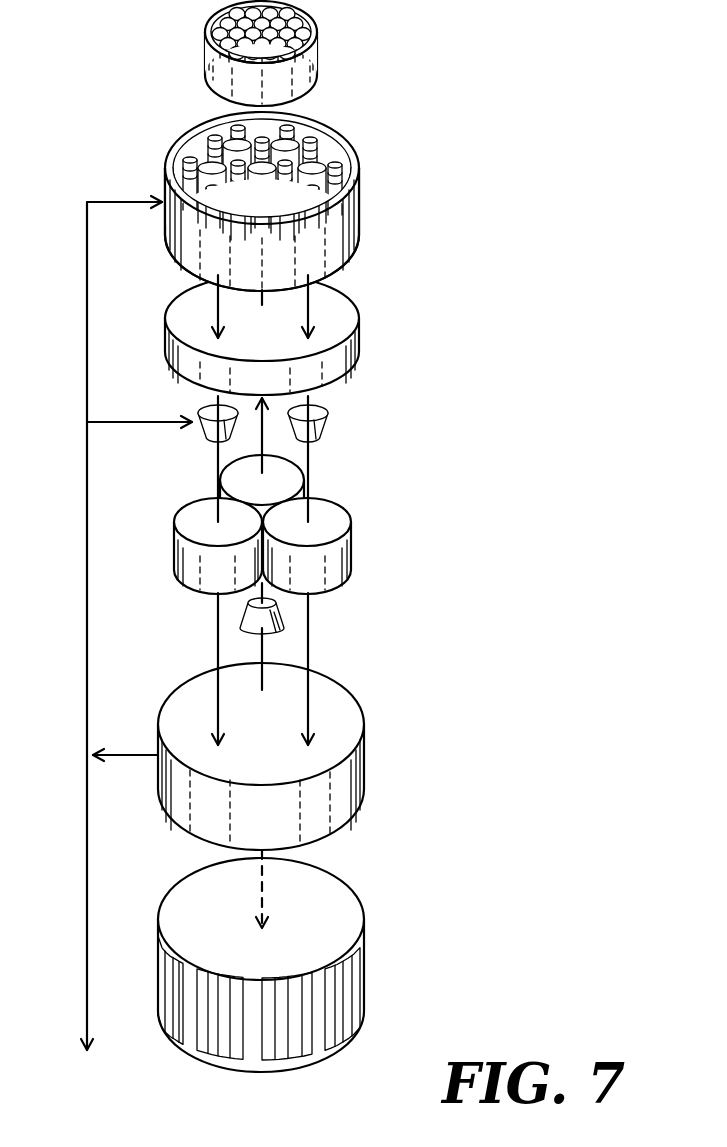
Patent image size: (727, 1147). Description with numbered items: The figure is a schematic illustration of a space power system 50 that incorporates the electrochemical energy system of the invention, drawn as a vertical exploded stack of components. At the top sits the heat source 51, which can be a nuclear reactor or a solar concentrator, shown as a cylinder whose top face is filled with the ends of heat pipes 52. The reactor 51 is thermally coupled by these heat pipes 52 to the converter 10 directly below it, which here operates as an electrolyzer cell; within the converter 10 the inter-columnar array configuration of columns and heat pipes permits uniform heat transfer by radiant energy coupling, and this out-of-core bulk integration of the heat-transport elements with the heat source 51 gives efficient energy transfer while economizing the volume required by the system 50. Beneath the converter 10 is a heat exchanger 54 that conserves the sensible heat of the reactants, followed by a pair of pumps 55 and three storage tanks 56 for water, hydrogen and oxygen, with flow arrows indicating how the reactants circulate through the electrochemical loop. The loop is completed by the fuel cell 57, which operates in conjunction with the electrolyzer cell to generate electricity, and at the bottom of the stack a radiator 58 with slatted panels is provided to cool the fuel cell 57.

The converter 10 is at (367, 202).
The space power system 50 is at (107, 52).
The heat source 51 is at (322, 53).
The heat pipes 52 is at (334, 42).
The heat exchanger 54 is at (365, 338).
The pumps 55 is at (332, 425).
The storage tanks 56 is at (360, 546).
The fuel cell 57 is at (370, 757).
The radiator 58 is at (370, 960).